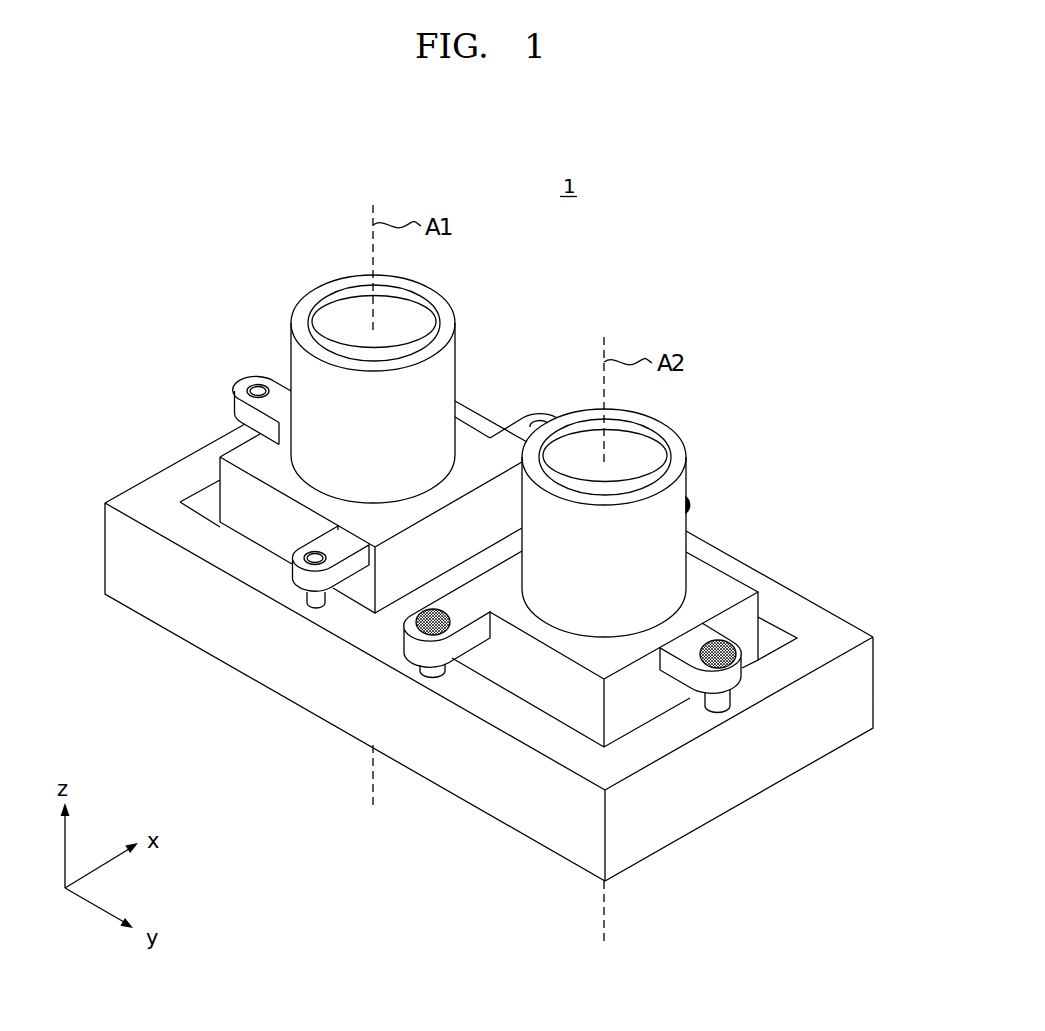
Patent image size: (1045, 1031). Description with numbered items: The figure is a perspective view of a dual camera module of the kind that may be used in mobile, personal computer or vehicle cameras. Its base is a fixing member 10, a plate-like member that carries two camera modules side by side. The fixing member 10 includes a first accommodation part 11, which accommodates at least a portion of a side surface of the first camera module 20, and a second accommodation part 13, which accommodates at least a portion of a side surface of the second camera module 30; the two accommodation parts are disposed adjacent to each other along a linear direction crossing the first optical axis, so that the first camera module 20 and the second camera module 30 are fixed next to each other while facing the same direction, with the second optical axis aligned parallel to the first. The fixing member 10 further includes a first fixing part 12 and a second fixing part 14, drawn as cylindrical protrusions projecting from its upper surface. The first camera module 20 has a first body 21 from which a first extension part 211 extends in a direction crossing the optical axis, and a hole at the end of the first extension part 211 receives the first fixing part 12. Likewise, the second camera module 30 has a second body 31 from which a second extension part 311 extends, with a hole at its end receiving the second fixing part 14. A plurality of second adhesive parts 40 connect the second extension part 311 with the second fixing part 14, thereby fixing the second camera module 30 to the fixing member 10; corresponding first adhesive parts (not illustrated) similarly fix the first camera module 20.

The fixing member 10 is at (488, 645).
The first accommodation part 11 is at (188, 507).
The first fixing part 12 is at (306, 599).
The second accommodation part 13 is at (560, 723).
The second fixing part 14 is at (421, 666).
The first camera module 20 is at (328, 526).
The first body 21 is at (225, 485).
The first extension part 211 is at (352, 567).
The second camera module 30 is at (630, 638).
The second body 31 is at (637, 703).
The second extension part 311 is at (473, 640).
The second adhesive part 40 is at (733, 663).